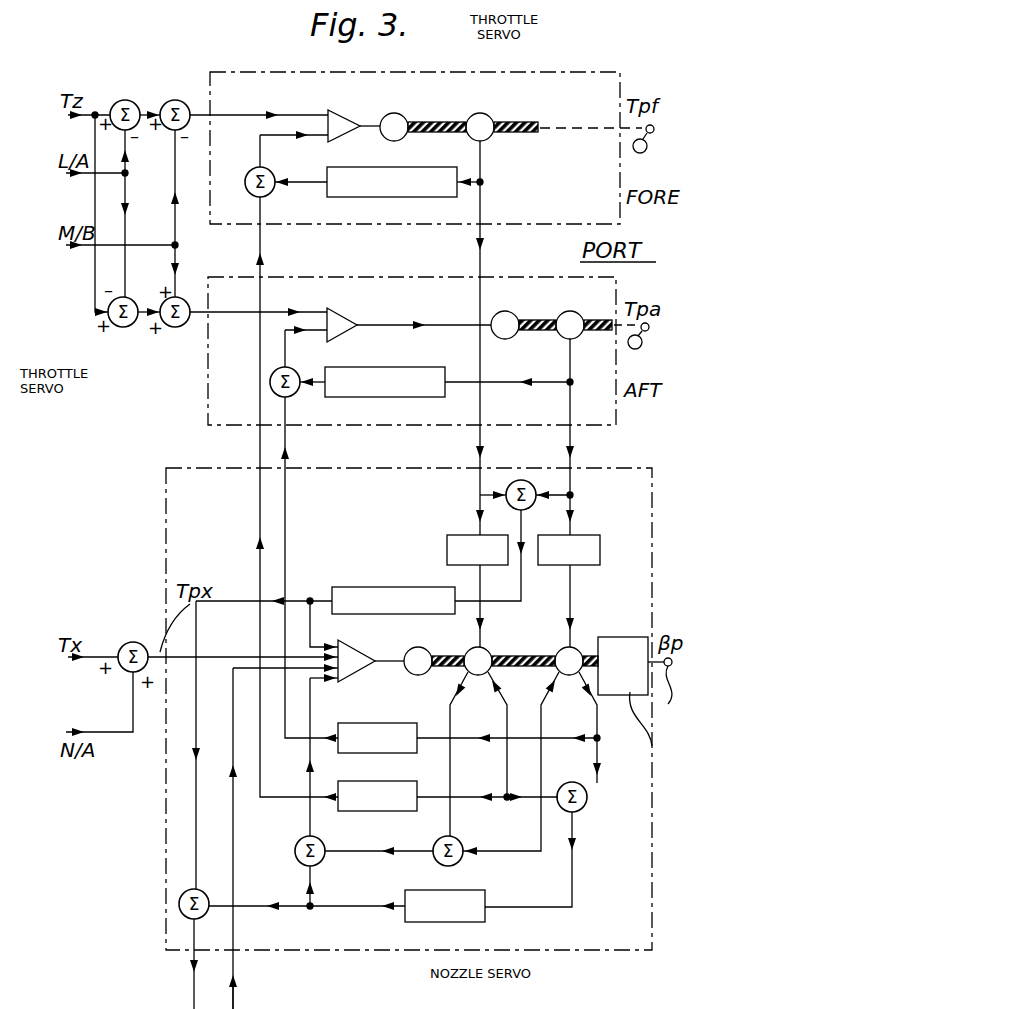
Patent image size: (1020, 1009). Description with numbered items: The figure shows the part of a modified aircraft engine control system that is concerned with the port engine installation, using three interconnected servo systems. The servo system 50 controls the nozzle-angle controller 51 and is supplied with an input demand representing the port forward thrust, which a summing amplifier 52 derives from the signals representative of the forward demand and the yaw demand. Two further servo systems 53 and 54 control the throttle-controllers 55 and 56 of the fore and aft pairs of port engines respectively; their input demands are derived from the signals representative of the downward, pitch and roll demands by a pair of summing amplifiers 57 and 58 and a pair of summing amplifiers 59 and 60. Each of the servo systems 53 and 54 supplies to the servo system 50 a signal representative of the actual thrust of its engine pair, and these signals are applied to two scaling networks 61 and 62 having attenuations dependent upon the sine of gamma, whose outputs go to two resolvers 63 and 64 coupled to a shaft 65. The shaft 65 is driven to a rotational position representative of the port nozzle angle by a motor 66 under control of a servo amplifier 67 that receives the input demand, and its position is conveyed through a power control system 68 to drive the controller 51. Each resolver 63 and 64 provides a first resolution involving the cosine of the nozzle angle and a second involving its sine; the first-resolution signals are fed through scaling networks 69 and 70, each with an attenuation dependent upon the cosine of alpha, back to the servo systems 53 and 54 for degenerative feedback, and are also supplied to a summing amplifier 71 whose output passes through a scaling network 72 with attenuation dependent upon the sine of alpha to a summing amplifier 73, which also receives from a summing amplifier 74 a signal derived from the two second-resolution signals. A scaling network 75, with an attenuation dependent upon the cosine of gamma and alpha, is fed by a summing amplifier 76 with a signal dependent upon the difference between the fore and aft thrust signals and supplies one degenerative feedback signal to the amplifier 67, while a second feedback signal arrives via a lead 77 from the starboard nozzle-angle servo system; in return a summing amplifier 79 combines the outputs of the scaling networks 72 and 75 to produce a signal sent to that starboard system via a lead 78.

The servo system 50 is at (660, 500).
The nozzle-angle controller 51 is at (667, 737).
The summing amplifier 52 is at (138, 643).
The servo system 53 is at (472, 72).
The servo system 54 is at (200, 385).
The throttle-controller 55 is at (668, 152).
The throttle-controller 56 is at (642, 342).
The summing amplifier 57 is at (148, 78).
The summing amplifier 58 is at (180, 100).
The summing amplifier 59 is at (126, 327).
The summing amplifier 60 is at (180, 327).
The scaling network 61 is at (448, 536).
The scaling network 62 is at (600, 540).
The resolver 63 is at (486, 652).
The resolver 64 is at (576, 650).
The shaft 65 is at (536, 656).
The motor 66 is at (408, 676).
The servo amplifier 67 is at (354, 656).
The power control system 68 is at (640, 640).
The scaling network 69 is at (400, 782).
The scaling network 70 is at (400, 724).
The summing amplifier 71 is at (582, 810).
The scaling network 72 is at (470, 922).
The summing amplifier 73 is at (296, 860).
The summing amplifier 74 is at (458, 864).
The scaling network 75 is at (360, 587).
The summing amplifier 76 is at (530, 482).
The lead 77 is at (234, 986).
The lead 78 is at (192, 985).
The summing amplifier 79 is at (180, 906).